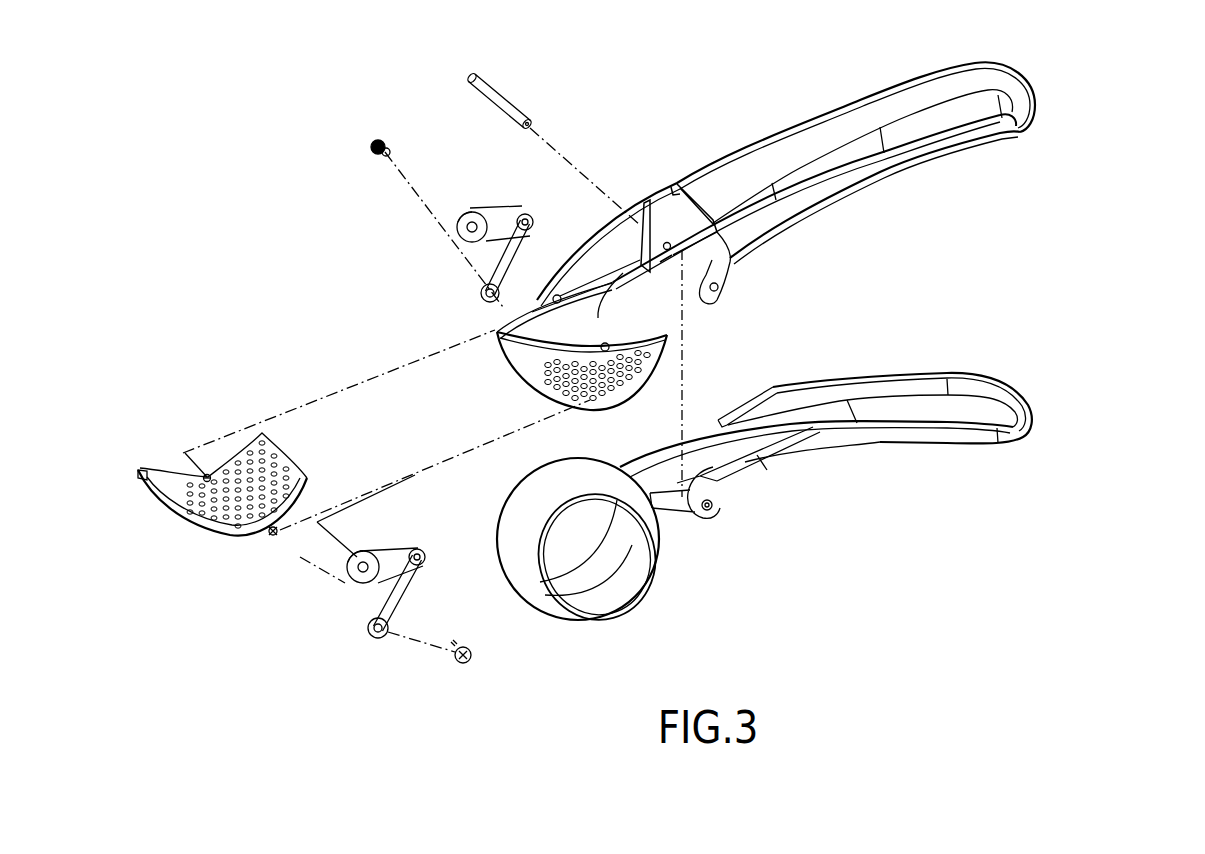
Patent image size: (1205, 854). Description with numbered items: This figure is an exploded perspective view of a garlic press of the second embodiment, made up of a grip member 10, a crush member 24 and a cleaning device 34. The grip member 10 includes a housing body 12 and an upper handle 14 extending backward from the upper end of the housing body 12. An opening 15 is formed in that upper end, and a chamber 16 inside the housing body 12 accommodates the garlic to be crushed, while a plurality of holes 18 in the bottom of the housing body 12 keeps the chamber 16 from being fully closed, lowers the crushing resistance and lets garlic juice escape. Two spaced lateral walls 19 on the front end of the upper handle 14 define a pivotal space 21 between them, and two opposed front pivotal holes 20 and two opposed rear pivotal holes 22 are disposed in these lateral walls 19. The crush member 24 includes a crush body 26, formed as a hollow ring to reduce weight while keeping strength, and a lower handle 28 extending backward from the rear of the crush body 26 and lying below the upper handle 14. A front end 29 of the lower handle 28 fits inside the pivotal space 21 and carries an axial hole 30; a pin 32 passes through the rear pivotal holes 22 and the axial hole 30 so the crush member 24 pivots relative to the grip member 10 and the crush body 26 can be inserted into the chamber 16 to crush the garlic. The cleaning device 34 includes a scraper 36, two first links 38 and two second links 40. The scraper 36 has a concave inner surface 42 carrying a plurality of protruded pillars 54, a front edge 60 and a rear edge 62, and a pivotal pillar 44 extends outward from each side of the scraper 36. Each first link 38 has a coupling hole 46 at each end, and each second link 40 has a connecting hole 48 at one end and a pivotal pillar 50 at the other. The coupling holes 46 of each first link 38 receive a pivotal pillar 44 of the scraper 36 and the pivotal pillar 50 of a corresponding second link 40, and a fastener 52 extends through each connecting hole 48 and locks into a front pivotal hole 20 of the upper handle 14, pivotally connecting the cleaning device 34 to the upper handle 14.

The grip member 10 is at (1060, 77).
The housing body 12 is at (525, 357).
The upper handle 14 is at (843, 157).
The opening 15 is at (493, 340).
The chamber 16 is at (527, 340).
The holes 18 is at (620, 390).
The lateral walls 19 is at (698, 300).
The front pivotal holes 20 is at (609, 347).
The pivotal space 21 is at (667, 235).
The rear pivotal holes 22 is at (729, 282).
The crush member 24 is at (826, 471).
The crush body 26 is at (657, 573).
The lower handle 28 is at (910, 425).
The front end 29 is at (655, 482).
The axial hole 30 is at (714, 507).
The pin 32 is at (497, 78).
The cleaning device 34 is at (184, 397).
The scraper 36 is at (170, 513).
The first links 38 is at (465, 424).
The second links 40 is at (497, 220).
The concave inner surface 42 is at (240, 463).
The pivotal pillar 44 is at (205, 475).
The coupling hole 46 is at (483, 290).
The connecting hole 48 is at (477, 230).
The pivotal pillar 50 is at (530, 223).
The fastener 52 is at (371, 146).
The protruded pillars 54 is at (237, 533).
The front edge 60 is at (140, 476).
The rear edge 62 is at (270, 457).